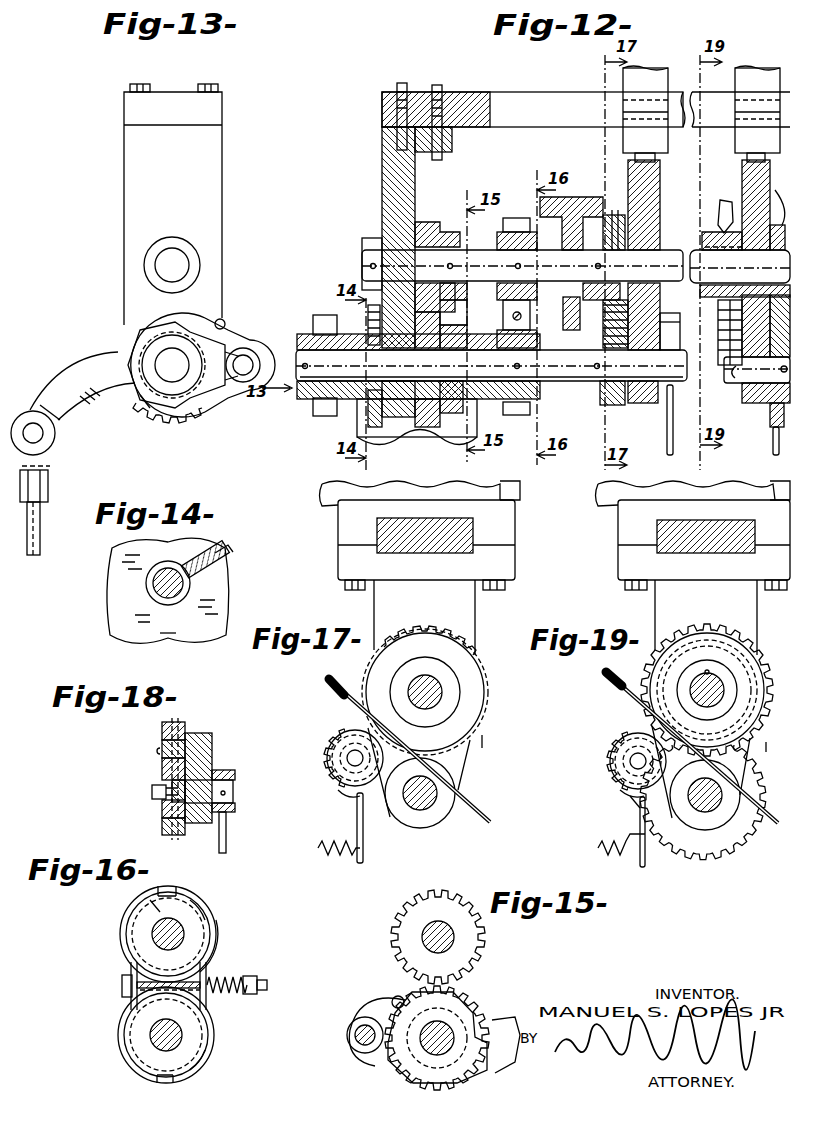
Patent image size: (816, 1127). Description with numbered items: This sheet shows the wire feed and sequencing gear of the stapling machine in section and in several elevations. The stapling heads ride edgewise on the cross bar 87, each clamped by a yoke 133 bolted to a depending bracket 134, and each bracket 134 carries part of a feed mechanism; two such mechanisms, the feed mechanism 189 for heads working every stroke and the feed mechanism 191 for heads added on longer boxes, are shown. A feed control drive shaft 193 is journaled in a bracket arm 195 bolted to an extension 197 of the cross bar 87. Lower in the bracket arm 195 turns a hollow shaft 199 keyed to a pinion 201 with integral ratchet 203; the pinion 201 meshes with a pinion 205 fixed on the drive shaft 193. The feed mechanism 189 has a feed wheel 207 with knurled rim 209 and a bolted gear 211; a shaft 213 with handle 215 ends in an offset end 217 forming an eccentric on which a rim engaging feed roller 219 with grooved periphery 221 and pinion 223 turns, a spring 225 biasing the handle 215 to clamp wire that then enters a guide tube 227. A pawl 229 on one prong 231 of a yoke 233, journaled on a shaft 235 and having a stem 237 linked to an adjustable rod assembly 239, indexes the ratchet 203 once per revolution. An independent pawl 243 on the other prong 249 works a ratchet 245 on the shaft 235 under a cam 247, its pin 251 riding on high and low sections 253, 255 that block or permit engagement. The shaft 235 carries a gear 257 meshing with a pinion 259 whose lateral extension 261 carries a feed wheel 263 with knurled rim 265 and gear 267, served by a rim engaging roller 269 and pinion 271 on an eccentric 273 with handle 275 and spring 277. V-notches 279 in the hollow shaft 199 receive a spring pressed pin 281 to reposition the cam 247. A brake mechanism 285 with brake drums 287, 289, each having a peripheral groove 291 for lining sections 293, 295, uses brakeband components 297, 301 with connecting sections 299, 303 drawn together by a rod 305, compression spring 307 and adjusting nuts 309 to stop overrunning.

In FIG. 17, the cross bar 87 is at (380, 530).
In FIG. 19, the cross bar 87 is at (660, 530).
In FIG. 12, the cross bar 87 is at (590, 100).
In FIG. 17, the yoke 133 is at (500, 524).
In FIG. 18, the depending bracket 134 is at (213, 742).
In FIG. 17, the depending bracket 134 is at (466, 611).
In FIG. 19, the depending bracket 134 is at (663, 610).
In FIG. 12, the depending bracket 134 is at (655, 188).
In FIG. 17, the feed mechanism 189 is at (504, 737).
In FIG. 12, the feed mechanism 189 is at (586, 316).
In FIG. 19, the feed mechanism 191 is at (777, 743).
In FIG. 12, the feed mechanism 191 is at (741, 365).
In FIG. 13, the feed control drive shaft 193 is at (172, 258).
In FIG. 16, the feed control drive shaft 193 is at (157, 936).
In FIG. 17, the feed control drive shaft 193 is at (425, 708).
In FIG. 19, the feed control drive shaft 193 is at (700, 690).
In FIG. 15, the feed control drive shaft 193 is at (425, 934).
In FIG. 12, the feed control drive shaft 193 is at (522, 264).
In FIG. 13, the bracket arm 195 is at (138, 193).
In FIG. 12, the bracket arm 195 is at (392, 186).
In FIG. 13, the extension 197 is at (125, 108).
In FIG. 12, the extension 197 is at (497, 93).
In FIG. 13, the hollow shaft 199 is at (122, 318).
In FIG. 14, the hollow shaft 199 is at (150, 583).
In FIG. 12, the hollow shaft 199 is at (398, 348).
In FIG. 15, the pinion 201 is at (442, 990).
In FIG. 12, the pinion 201 is at (425, 428).
In FIG. 15, the ratchet 203 is at (475, 1002).
In FIG. 12, the ratchet 203 is at (455, 415).
In FIG. 15, the pinion 205 is at (487, 940).
In FIG. 12, the pinion 205 is at (455, 210).
In FIG. 18, the feed wheel 207 is at (162, 731).
In FIG. 17, the feed wheel 207 is at (466, 670).
In FIG. 12, the feed wheel 207 is at (588, 195).
In FIG. 18, the knurled rim 209 is at (162, 760).
In FIG. 17, the knurled rim 209 is at (470, 740).
In FIG. 12, the knurled rim 209 is at (608, 215).
In FIG. 18, the gear 211 is at (180, 724).
In FIG. 17, the gear 211 is at (420, 640).
In FIG. 12, the gear 211 is at (622, 300).
In FIG. 18, the shaft 213 is at (234, 792).
In FIG. 18, the handle 215 is at (227, 841).
In FIG. 17, the handle 215 is at (365, 830).
In FIG. 12, the handle 215 is at (667, 429).
In FIG. 18, the reduced offset end 217 is at (152, 791).
In FIG. 18, the rim engaging feed roller 219 is at (162, 820).
In FIG. 17, the rim engaging feed roller 219 is at (345, 795).
In FIG. 12, the rim engaging feed roller 219 is at (600, 350).
In FIG. 18, the grooved periphery 221 is at (163, 833).
In FIG. 18, the pinion 223 is at (186, 830).
In FIG. 17, the pinion 223 is at (328, 760).
In FIG. 12, the pinion 223 is at (612, 348).
In FIG. 17, the spring 225 is at (320, 865).
In FIG. 17, the guide tube 227 is at (334, 700).
In FIG. 19, the guide tube 227 is at (610, 688).
In FIG. 15, the pawl 229 is at (390, 1003).
In FIG. 15, the prong 231 is at (380, 1062).
In FIG. 13, the yoke 233 is at (70, 378).
In FIG. 15, the yoke 233 is at (503, 1072).
In FIG. 12, the yoke 233 is at (372, 442).
In FIG. 13, the shaft 235 is at (176, 360).
In FIG. 14, the shaft 235 is at (158, 600).
In FIG. 16, the shaft 235 is at (160, 1046).
In FIG. 17, the shaft 235 is at (430, 806).
In FIG. 19, the shaft 235 is at (705, 813).
In FIG. 15, the shaft 235 is at (428, 1048).
In FIG. 12, the shaft 235 is at (491, 365).
In FIG. 13, the stem 237 is at (62, 422).
In FIG. 13, the adjustable rod assembly 239 is at (42, 526).
In FIG. 13, the pawl 243 is at (240, 336).
In FIG. 13, the ratchet 245 is at (212, 402).
In FIG. 12, the ratchet 245 is at (320, 320).
In FIG. 13, the cam 247 is at (128, 334).
In FIG. 14, the cam 247 is at (222, 598).
In FIG. 12, the cam 247 is at (368, 425).
In FIG. 13, the prong 249 is at (142, 412).
In FIG. 13, the pin 251 is at (224, 320).
In FIG. 13, the high sections 253 is at (122, 395).
In FIG. 13, the low sections 255 is at (170, 330).
In FIG. 19, the gear 257 is at (745, 855).
In FIG. 12, the gear 257 is at (775, 430).
In FIG. 19, the pinion 259 is at (660, 705).
In FIG. 12, the pinion 259 is at (775, 200).
In FIG. 12, the lateral extension 261 is at (748, 252).
In FIG. 14, the feed wheel 263 is at (223, 562).
In FIG. 19, the feed wheel 263 is at (745, 660).
In FIG. 12, the feed wheel 263 is at (708, 242).
In FIG. 19, the knurled rim 265 is at (742, 672).
In FIG. 12, the knurled rim 265 is at (722, 218).
In FIG. 19, the gear 267 is at (706, 640).
In FIG. 12, the gear 267 is at (733, 225).
In FIG. 19, the rim engaging roller 269 is at (634, 800).
In FIG. 12, the rim engaging roller 269 is at (720, 330).
In FIG. 19, the pinion 271 is at (610, 751).
In FIG. 12, the pinion 271 is at (735, 380).
In FIG. 19, the eccentric 273 is at (630, 794).
In FIG. 19, the handle 275 is at (640, 833).
In FIG. 12, the handle 275 is at (773, 448).
In FIG. 19, the spring 277 is at (598, 865).
In FIG. 14, the V-notches 279 is at (170, 635).
In FIG. 14, the spring pressed pin 281 is at (210, 585).
In FIG. 12, the spring pressed pin 281 is at (370, 330).
In FIG. 16, the brake mechanism 285 is at (135, 1000).
In FIG. 12, the brake mechanism 285 is at (500, 332).
In FIG. 16, the brake drum 287 is at (150, 910).
In FIG. 12, the brake drum 287 is at (497, 240).
In FIG. 16, the brake drum 289 is at (190, 1050).
In FIG. 12, the brake drum 289 is at (528, 342).
In FIG. 12, the peripheral groove 291 is at (517, 220).
In FIG. 16, the brake lining sections 293 is at (196, 912).
In FIG. 16, the brake lining sections 295 is at (132, 921).
In FIG. 16, the brakeband component 297 is at (216, 935).
In FIG. 16, the intermediate connecting section 299 is at (206, 974).
In FIG. 16, the brakeband component 301 is at (120, 1027).
In FIG. 16, the intermediate connecting section 303 is at (128, 977).
In FIG. 16, the rod 305 is at (200, 1004).
In FIG. 12, the rod 305 is at (522, 316).
In FIG. 16, the compression spring 307 is at (242, 973).
In FIG. 16, the adjusting nuts 309 is at (260, 1000).